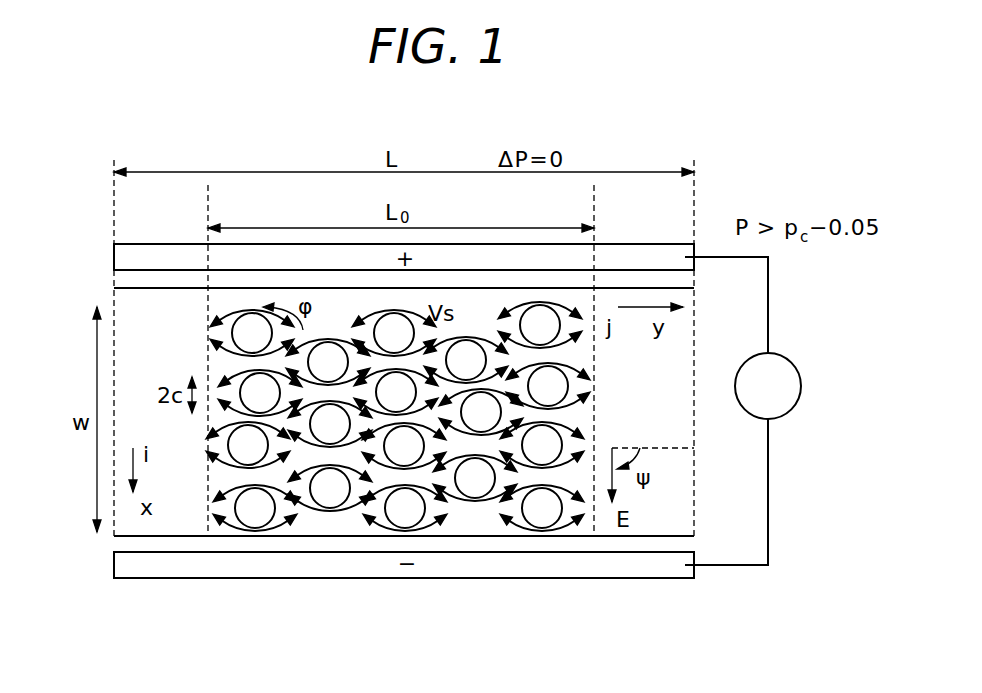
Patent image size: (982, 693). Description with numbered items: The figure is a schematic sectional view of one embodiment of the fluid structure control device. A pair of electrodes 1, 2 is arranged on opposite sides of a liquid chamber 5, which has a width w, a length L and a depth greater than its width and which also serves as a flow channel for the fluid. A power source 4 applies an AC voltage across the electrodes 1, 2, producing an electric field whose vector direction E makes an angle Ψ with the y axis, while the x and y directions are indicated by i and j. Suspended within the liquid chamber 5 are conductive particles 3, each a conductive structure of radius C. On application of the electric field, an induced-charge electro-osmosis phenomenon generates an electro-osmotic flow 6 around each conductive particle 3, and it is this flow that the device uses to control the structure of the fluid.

The electrode 1 is at (125, 257).
The electrode 2 is at (124, 567).
The conductive particle 3 is at (548, 312).
The power source 4 is at (788, 413).
The liquid chamber 5 is at (233, 302).
The electro-osmotic flow 6 is at (438, 513).